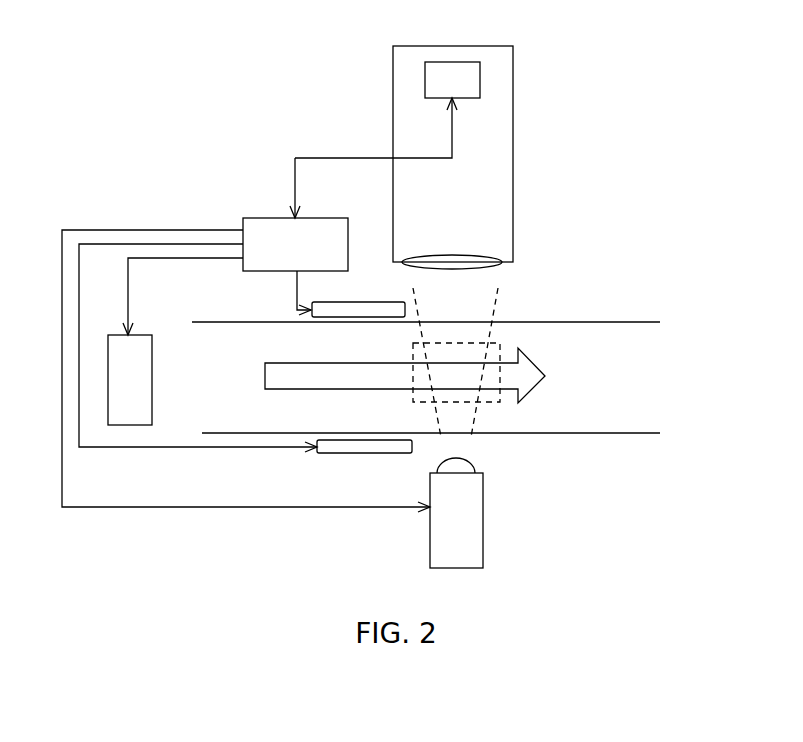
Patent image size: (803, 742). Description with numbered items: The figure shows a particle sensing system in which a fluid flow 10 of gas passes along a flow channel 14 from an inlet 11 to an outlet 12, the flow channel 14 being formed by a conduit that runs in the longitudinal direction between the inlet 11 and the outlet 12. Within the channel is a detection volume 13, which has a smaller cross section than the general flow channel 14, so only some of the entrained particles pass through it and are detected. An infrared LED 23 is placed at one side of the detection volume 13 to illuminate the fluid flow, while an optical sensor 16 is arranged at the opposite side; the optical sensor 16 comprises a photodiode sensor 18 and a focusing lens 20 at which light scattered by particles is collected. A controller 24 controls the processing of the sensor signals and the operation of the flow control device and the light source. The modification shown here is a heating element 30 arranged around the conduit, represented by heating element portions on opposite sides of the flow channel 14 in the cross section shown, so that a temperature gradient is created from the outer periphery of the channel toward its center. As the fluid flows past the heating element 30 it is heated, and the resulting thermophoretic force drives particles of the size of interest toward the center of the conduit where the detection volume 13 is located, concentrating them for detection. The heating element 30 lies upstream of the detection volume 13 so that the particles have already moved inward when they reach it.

The fluid flow 10 is at (288, 365).
The inlet 11 is at (188, 389).
The outlet 12 is at (614, 390).
The detection volume 13 is at (500, 342).
The flow channel 14 is at (602, 321).
The optical sensor 16 is at (513, 80).
The photodiode sensor 18 is at (425, 80).
The focusing lens 20 is at (457, 257).
The infrared LED 23 is at (430, 555).
The controller 24 is at (258, 218).
The heating element 30 is at (367, 302).